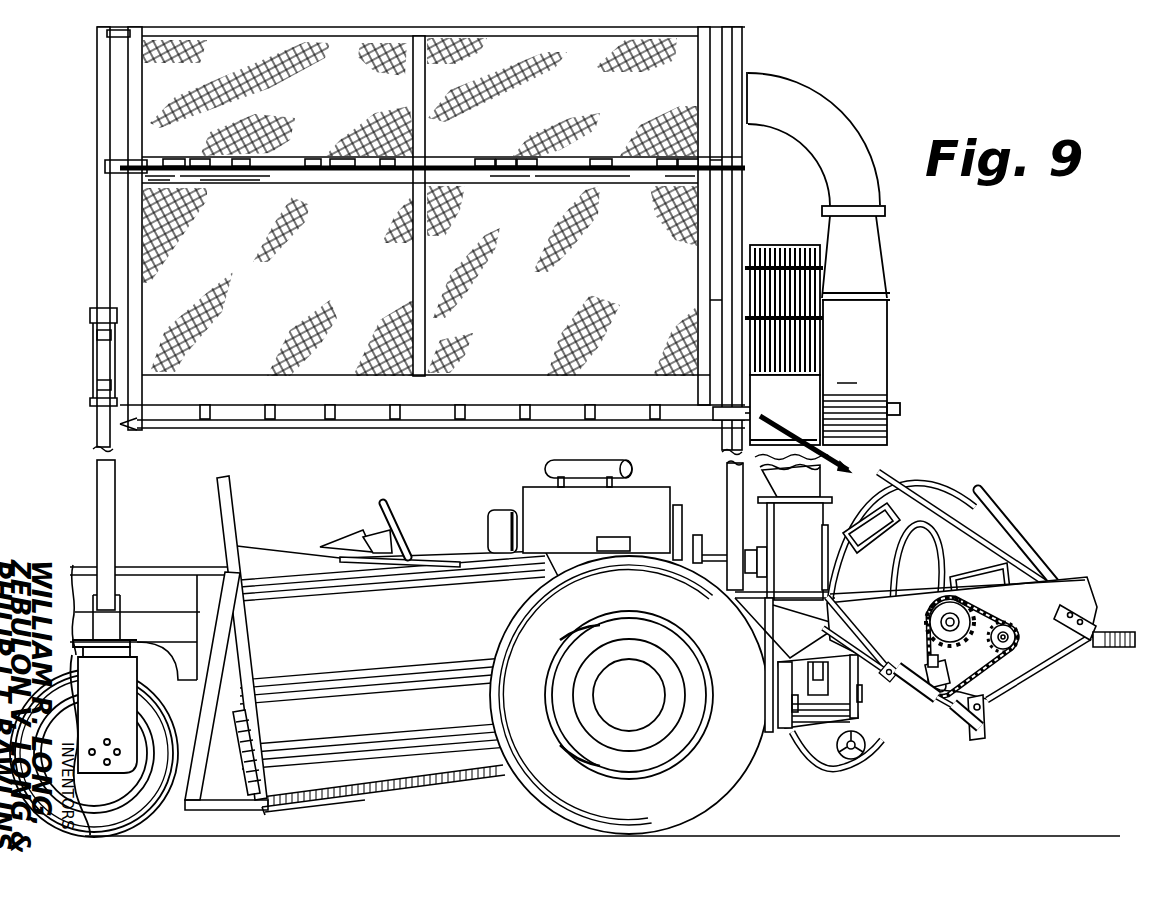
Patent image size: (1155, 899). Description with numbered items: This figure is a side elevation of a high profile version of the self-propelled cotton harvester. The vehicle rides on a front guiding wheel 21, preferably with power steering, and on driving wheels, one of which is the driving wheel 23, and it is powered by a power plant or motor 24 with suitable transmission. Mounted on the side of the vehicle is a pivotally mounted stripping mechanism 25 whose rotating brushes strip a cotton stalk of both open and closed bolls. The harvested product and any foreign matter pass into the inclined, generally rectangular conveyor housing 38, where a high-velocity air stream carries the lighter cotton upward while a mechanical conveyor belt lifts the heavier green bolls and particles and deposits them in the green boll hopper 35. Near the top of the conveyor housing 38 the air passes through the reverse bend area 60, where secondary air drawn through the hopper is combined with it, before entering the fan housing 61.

The front guiding wheel 21 is at (150, 817).
The driving wheel 23 is at (724, 783).
The power plant or motor 24 is at (598, 519).
The stripping mechanism 25 is at (383, 771).
The green boll hopper 35 is at (1025, 676).
The conveyor housing 38 is at (880, 740).
The reverse bend area 60 is at (930, 493).
The fan housing 61 is at (803, 571).